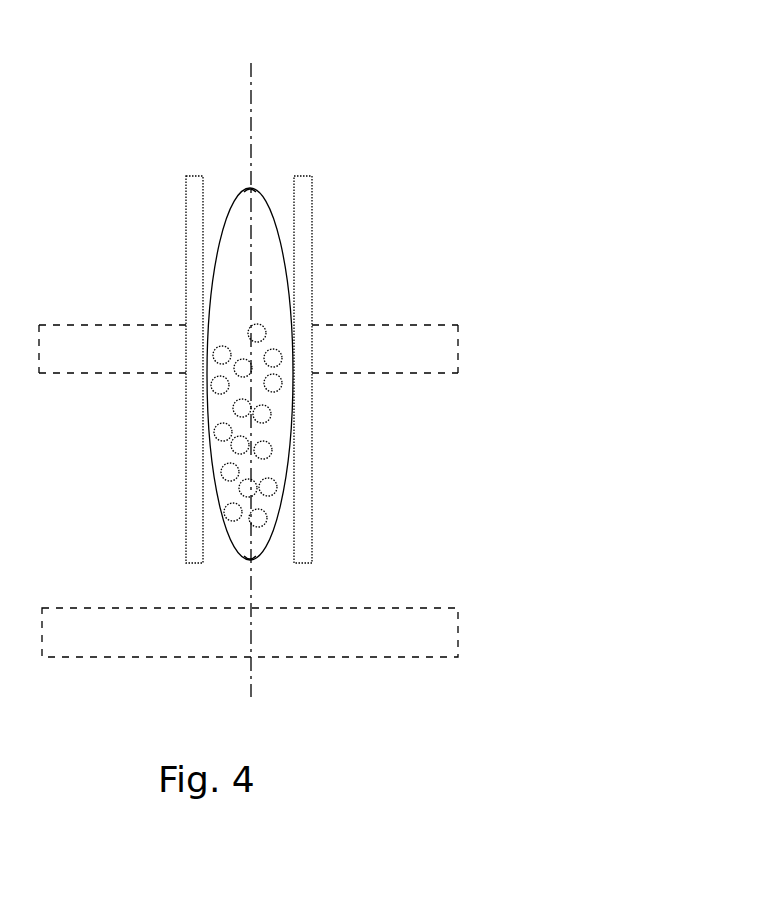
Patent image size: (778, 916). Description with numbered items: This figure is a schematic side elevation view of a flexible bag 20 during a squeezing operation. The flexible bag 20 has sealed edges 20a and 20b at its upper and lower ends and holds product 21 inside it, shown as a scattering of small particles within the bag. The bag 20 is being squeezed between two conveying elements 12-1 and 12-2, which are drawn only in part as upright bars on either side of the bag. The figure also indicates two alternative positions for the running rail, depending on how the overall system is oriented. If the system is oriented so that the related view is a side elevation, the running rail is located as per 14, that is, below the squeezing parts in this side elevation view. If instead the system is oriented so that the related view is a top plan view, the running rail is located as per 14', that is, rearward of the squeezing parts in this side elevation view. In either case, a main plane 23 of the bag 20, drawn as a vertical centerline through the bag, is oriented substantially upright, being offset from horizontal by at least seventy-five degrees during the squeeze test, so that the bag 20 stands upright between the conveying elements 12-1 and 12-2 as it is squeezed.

The conveying element 12-1 is at (182, 193).
The conveying element 12-2 is at (313, 192).
The running rail 14 is at (250, 666).
The running rail 14' is at (259, 308).
The flexible bag 20 is at (230, 207).
The sealed edge 20a is at (249, 186).
The sealed edge 20b is at (250, 582).
The product 21 is at (268, 341).
The main plane 23 is at (253, 103).